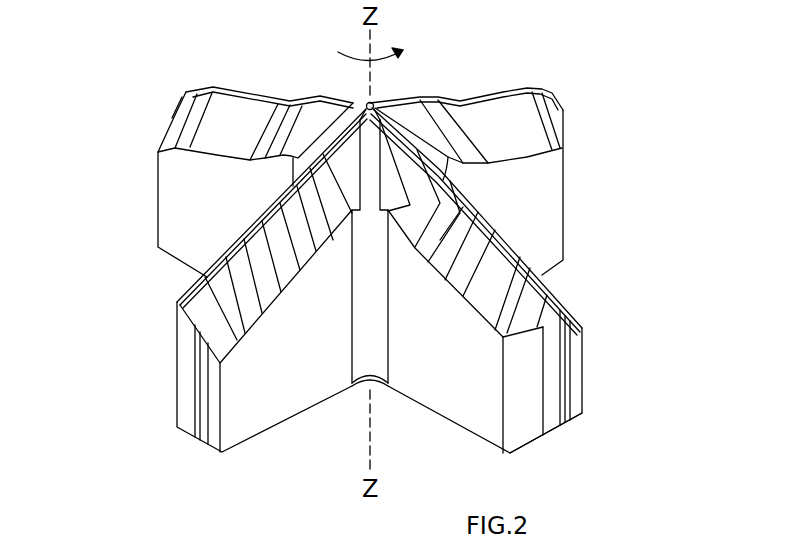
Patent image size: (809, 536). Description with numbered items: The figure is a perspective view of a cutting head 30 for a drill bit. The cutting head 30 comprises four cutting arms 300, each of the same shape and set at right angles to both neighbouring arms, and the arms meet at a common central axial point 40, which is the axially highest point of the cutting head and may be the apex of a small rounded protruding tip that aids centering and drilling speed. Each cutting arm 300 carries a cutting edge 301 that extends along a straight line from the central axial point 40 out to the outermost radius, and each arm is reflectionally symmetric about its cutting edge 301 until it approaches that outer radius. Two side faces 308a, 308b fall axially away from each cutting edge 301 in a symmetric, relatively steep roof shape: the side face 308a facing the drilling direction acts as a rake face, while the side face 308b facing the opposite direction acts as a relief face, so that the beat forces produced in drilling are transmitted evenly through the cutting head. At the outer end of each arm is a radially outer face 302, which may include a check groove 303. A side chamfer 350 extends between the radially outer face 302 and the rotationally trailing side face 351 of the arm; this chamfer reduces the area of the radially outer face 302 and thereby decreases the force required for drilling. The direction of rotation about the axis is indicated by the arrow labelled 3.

The cutting head 30 is at (128, 100).
The central axial point 40 is at (374, 104).
The rotation direction about axis Z 3 is at (380, 59).
The cutting arm 300 is at (158, 180).
The cutting edge 301 is at (236, 88).
The radially outer face 302 is at (187, 402).
The check groove 303 is at (195, 440).
The side face 308a is at (252, 120).
The side face 308b is at (520, 130).
The side chamfer 350 is at (528, 447).
The rotationally trailing side face 351 is at (543, 352).